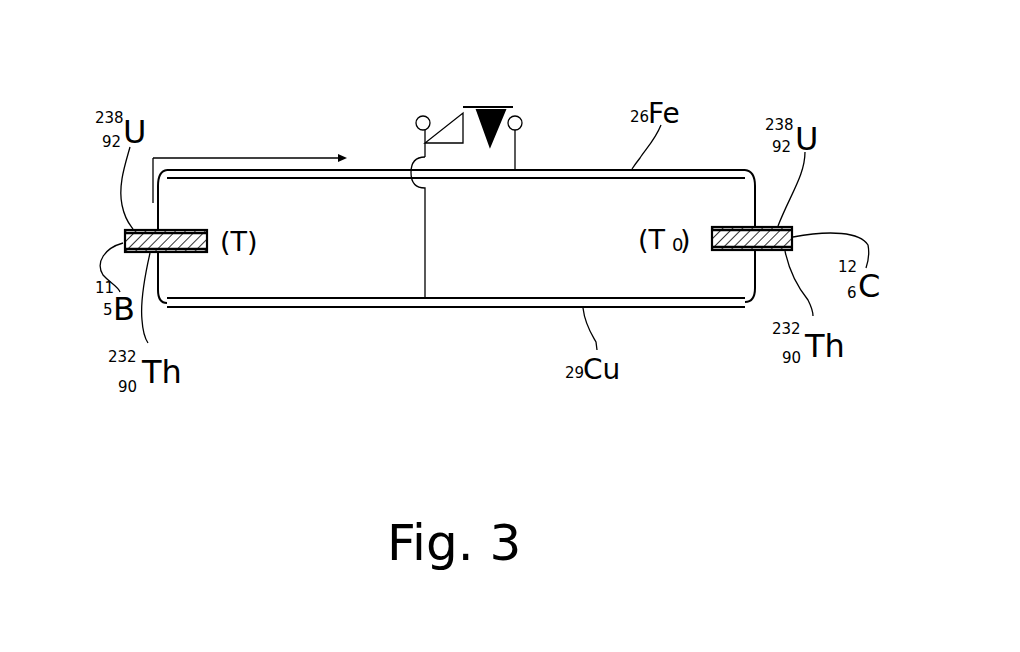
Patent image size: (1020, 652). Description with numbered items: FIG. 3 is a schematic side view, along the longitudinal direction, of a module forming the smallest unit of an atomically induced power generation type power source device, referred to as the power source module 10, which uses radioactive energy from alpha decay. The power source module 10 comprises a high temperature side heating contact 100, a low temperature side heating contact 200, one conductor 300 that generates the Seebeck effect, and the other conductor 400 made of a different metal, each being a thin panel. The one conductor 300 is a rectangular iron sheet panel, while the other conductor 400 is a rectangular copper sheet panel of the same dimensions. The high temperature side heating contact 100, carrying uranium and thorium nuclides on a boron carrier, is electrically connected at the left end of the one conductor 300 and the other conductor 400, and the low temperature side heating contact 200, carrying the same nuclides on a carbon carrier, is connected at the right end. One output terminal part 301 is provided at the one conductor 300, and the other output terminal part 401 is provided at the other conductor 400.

The power source module 10 is at (458, 215).
The high temperature side heating contact 100 is at (124, 230).
The low temperature side heating contact 200 is at (797, 225).
The one conductor 300 is at (372, 166).
The one output terminal part 301 is at (522, 125).
The other conductor 400 is at (381, 312).
The other output terminal part 401 is at (420, 116).